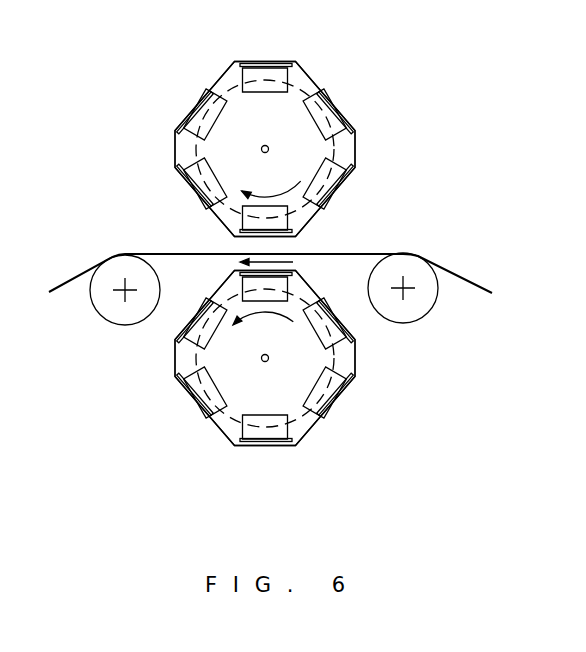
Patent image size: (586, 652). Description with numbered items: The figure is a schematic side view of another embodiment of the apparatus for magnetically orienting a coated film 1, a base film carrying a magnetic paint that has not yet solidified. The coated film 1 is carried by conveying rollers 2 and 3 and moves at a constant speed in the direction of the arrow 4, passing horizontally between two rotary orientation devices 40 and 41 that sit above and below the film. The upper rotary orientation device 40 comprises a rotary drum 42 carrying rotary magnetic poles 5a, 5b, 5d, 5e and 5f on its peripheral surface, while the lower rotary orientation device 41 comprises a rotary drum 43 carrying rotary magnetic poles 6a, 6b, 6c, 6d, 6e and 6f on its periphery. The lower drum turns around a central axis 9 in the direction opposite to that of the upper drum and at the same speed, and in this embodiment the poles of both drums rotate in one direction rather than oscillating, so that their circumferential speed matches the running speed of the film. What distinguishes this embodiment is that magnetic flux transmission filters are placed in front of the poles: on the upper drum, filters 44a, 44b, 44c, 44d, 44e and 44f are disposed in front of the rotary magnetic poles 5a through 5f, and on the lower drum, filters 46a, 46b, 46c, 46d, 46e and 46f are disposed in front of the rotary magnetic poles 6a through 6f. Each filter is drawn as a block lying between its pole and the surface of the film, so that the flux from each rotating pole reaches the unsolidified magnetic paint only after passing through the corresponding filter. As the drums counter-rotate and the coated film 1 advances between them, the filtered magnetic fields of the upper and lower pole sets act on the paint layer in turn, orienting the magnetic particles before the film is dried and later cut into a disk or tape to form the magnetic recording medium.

The coated film 1 is at (453, 273).
The conveying roller 2 is at (100, 305).
The conveying roller 3 is at (422, 310).
The arrow 4 is at (299, 271).
The central axis 9 is at (256, 186).
The rotary orientation device 40 is at (176, 94).
The rotary orientation device 41 is at (364, 418).
The rotary drum 42 is at (222, 78).
The rotary drum 43 is at (177, 373).
The magnetic flux transmission filter 44a is at (278, 241).
The magnetic flux transmission filter 44b is at (353, 182).
The magnetic flux transmission filter 44c is at (345, 108).
The magnetic flux transmission filter 44d is at (264, 63).
The magnetic flux transmission filter 44e is at (183, 113).
The magnetic flux transmission filter 44f is at (189, 198).
The rotary magnetic pole 5a is at (322, 225).
The rotary magnetic pole 5b is at (348, 163).
The rotary magnetic pole 5d is at (290, 73).
The rotary magnetic pole 5e is at (321, 92).
The rotary magnetic pole 5f is at (183, 189).
The magnetic flux transmission filter 46a is at (297, 270).
The magnetic flux transmission filter 46b is at (365, 334).
The magnetic flux transmission filter 46c is at (336, 409).
The magnetic flux transmission filter 46d is at (263, 446).
The magnetic flux transmission filter 46e is at (192, 408).
The magnetic flux transmission filter 46f is at (190, 312).
The rotary magnetic pole 6a is at (243, 283).
The rotary magnetic pole 6b is at (357, 352).
The rotary magnetic pole 6c is at (361, 378).
The rotary magnetic pole 6d is at (300, 443).
The rotary magnetic pole 6e is at (212, 420).
The rotary magnetic pole 6f is at (177, 358).